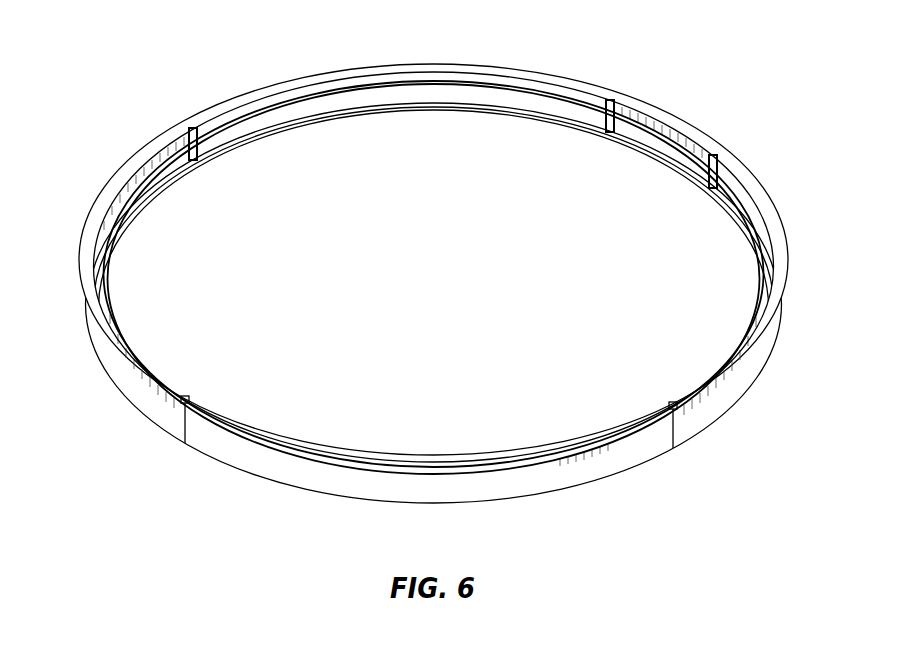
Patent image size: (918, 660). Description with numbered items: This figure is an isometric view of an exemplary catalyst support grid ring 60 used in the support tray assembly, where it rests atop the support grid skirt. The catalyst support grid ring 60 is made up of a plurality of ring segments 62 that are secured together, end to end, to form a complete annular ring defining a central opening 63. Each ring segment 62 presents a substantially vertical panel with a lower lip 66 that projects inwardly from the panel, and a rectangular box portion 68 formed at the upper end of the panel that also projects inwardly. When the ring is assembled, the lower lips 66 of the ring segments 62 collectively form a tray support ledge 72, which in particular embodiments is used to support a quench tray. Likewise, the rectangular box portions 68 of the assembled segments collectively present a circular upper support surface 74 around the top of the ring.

The catalyst support grid ring 60 is at (426, 278).
The ring segment 62 is at (520, 67).
The central opening 63 is at (445, 296).
The lower lip 66 is at (430, 112).
The rectangular box portion 68 is at (630, 110).
The tray support ledge 72 is at (507, 112).
The circular upper support surface 74 is at (143, 156).